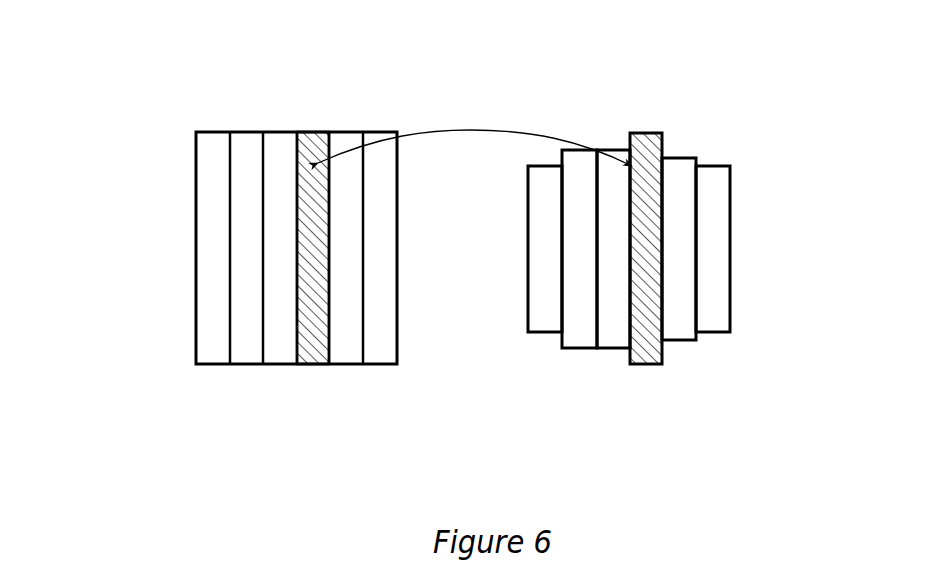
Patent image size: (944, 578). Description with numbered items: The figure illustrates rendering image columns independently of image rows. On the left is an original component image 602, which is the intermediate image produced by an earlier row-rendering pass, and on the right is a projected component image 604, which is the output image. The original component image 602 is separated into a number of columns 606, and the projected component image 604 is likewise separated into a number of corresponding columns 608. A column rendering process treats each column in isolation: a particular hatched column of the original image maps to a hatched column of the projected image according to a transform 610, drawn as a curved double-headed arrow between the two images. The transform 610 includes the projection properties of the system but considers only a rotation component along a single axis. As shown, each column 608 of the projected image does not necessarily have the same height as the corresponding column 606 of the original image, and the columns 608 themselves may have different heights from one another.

The original component image 602 is at (290, 111).
The projected component image 604 is at (652, 113).
The columns 606 is at (143, 249).
The corresponding columns 608 is at (749, 251).
The transform 610 is at (498, 73).